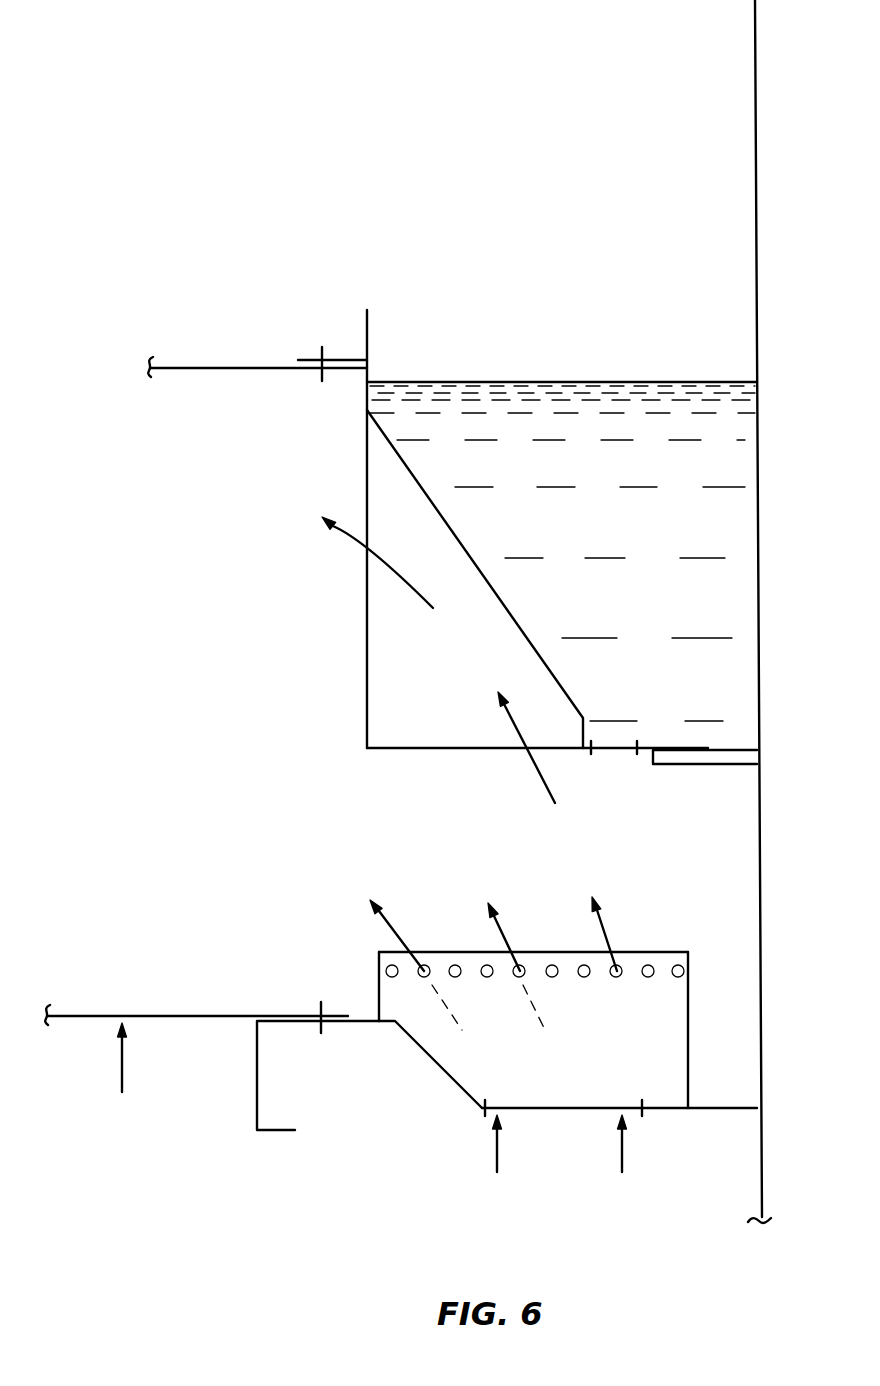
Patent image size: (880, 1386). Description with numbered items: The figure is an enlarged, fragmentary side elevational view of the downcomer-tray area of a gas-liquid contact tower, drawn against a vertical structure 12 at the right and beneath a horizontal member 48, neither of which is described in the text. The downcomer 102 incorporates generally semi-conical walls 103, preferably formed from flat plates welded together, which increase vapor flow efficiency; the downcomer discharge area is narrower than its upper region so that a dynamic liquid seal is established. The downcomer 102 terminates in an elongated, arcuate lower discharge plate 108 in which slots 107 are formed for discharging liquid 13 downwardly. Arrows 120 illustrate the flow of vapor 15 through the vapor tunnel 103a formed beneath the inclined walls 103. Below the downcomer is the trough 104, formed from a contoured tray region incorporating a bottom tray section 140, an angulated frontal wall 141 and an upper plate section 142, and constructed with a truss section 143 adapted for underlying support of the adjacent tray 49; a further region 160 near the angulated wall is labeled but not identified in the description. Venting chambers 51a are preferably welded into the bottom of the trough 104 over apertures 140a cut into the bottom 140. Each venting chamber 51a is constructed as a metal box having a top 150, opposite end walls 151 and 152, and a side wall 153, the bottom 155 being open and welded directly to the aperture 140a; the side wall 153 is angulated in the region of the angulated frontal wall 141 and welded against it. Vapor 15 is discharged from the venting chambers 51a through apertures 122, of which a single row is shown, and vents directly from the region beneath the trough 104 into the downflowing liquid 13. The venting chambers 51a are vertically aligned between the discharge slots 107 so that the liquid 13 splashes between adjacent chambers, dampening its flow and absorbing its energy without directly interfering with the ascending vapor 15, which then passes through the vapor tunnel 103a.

The housing wall 12 is at (757, 302).
The upper shelf 48 is at (233, 368).
The downcomer 102 is at (492, 360).
The semi-conical walls 103 is at (429, 496).
The vapor tunnel 103a is at (412, 650).
The liquid 13 is at (623, 534).
The arrows 120 is at (345, 537).
The slots 107 is at (633, 746).
The lower discharge plate 108 is at (700, 748).
The tray 49 is at (163, 1016).
The truss section 143 is at (257, 1083).
The end wall 151 is at (379, 992).
The end wall 152 is at (688, 1008).
The upper plate section 142 is at (360, 1023).
The bottom tray section 140 is at (522, 1105).
The apertures 140a is at (576, 1116).
The angulated frontal wall 141 is at (460, 1082).
The wall portion 160 is at (436, 1062).
The bottom 155 is at (607, 1105).
The side wall 153 is at (605, 1040).
The venting chambers 51a is at (690, 925).
The apertures 122 is at (454, 976).
The top 150 is at (438, 950).
The vapor 15 is at (122, 1073).
The trough 104 is at (714, 1082).